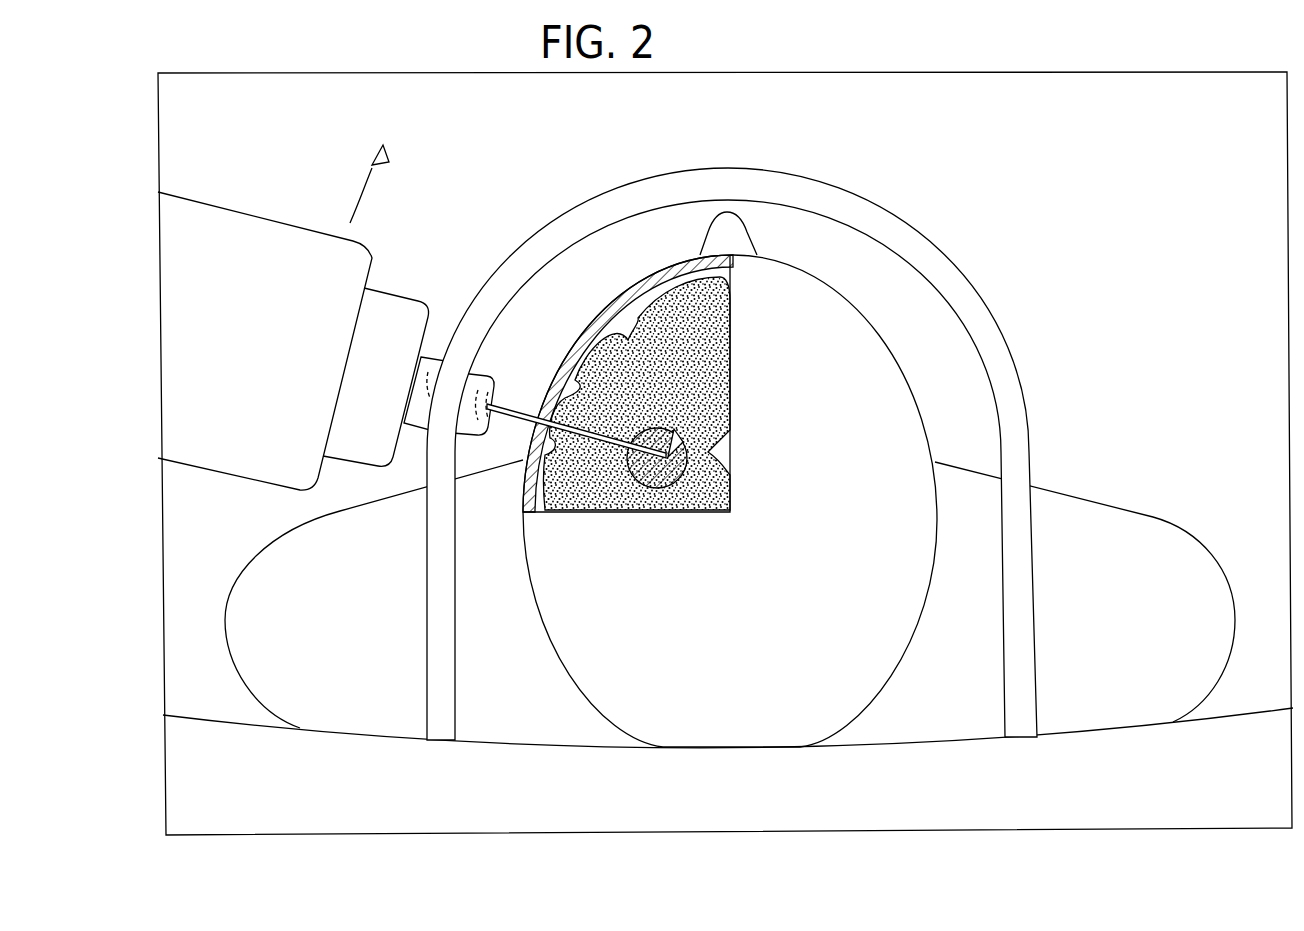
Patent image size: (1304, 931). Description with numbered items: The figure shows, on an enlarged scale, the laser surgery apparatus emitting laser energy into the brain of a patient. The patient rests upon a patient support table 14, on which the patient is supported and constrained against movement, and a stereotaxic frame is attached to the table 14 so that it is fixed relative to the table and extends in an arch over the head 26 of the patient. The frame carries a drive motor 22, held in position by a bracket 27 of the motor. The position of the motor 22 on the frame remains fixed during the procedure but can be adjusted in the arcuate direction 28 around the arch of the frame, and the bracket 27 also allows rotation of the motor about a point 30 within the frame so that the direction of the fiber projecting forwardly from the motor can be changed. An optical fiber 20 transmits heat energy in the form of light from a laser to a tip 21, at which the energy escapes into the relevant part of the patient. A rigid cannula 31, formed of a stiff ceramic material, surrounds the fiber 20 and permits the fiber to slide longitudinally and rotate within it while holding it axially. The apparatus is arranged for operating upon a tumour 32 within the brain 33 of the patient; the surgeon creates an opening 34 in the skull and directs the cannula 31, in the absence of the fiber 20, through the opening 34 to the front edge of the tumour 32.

The patient support table 14 is at (750, 800).
The optical fiber 20 is at (658, 487).
The tip 21 is at (680, 457).
The drive motor 22 is at (293, 227).
The head 26 is at (850, 297).
The bracket 27 is at (433, 360).
The arcuate direction 28 is at (360, 172).
The point 30 is at (430, 412).
The rigid cannula 31 is at (527, 425).
The tumour 32 is at (687, 448).
The brain 33 is at (700, 372).
The opening 34 is at (530, 428).